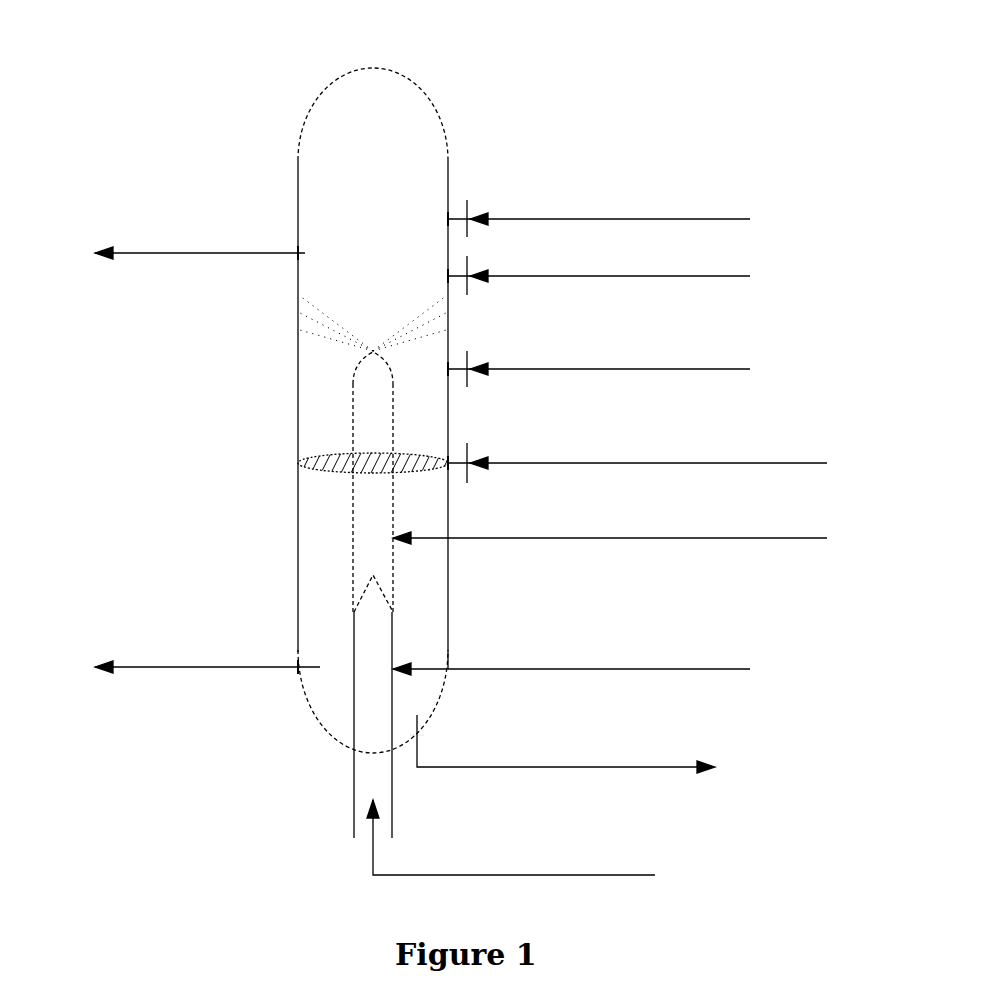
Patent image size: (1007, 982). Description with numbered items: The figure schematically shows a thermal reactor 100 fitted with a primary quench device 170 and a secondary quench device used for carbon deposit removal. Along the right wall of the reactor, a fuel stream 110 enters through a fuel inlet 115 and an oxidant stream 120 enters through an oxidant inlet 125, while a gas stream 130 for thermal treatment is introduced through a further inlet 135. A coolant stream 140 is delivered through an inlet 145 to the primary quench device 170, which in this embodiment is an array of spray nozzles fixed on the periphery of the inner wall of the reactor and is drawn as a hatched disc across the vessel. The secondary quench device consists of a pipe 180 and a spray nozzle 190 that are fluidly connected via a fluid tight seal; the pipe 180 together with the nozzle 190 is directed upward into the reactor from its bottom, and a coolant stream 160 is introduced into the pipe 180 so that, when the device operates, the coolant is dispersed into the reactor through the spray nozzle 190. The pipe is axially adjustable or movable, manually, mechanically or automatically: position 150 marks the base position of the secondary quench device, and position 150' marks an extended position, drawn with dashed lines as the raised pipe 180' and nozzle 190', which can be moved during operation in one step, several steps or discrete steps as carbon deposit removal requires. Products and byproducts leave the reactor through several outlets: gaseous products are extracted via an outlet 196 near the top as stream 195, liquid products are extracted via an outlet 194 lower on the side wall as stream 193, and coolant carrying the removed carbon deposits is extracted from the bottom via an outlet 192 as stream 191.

The thermal reactor 100 is at (373, 68).
The fuel stream 110 is at (599, 211).
The fuel inlet 115 is at (448, 219).
The oxidant stream 120 is at (599, 268).
The oxidant inlet 125 is at (448, 276).
The gas stream 130 is at (599, 363).
The inlet 135 is at (448, 369).
The coolant stream 140 is at (637, 458).
The inlet 145 is at (448, 463).
The base position 150 is at (571, 655).
The extended position 150' is at (610, 524).
The coolant stream 160 is at (511, 838).
The primary quench device 170 is at (300, 463).
The pipe 180 is at (284, 725).
The pipe 180' is at (286, 498).
The spray nozzle 190 is at (288, 586).
The nozzle 190' is at (288, 359).
The stream 191 is at (566, 744).
The outlet 192 is at (417, 735).
The stream 193 is at (207, 655).
The outlet 194 is at (298, 668).
The stream 195 is at (200, 240).
The outlet 196 is at (298, 253).